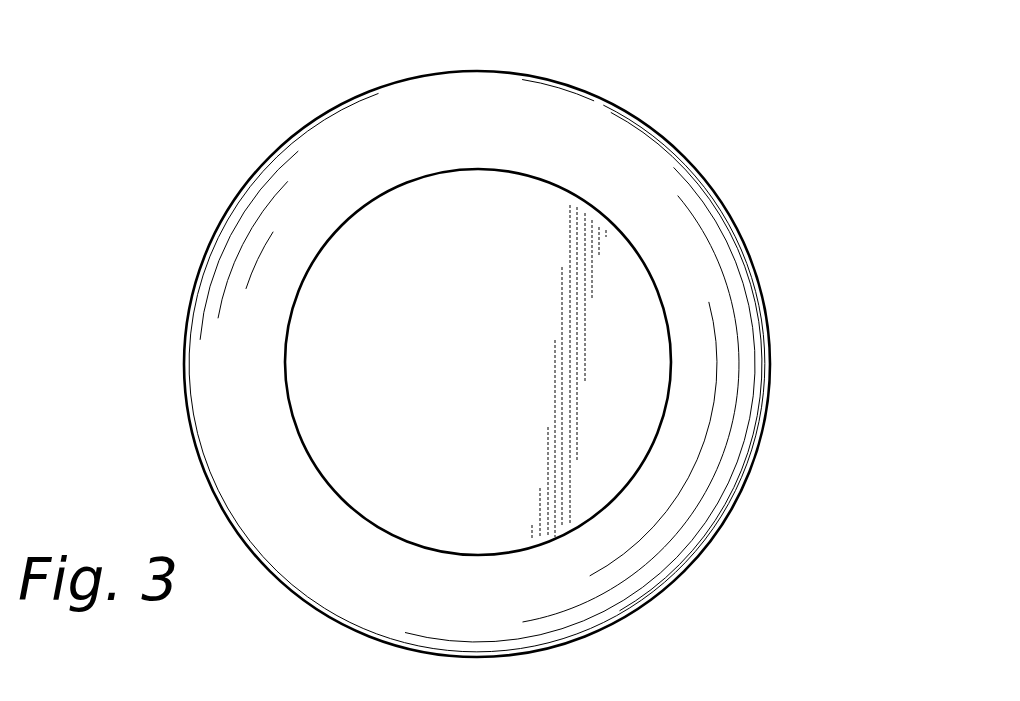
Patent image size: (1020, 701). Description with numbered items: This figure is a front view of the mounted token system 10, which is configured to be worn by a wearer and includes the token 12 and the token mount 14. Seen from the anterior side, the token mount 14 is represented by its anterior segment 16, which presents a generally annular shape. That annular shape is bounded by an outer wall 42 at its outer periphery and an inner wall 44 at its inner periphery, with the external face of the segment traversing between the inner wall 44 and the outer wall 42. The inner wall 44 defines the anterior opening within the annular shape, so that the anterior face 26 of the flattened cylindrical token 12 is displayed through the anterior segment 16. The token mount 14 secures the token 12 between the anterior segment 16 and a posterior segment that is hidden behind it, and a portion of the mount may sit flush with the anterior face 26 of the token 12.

The mounted token system 10 is at (812, 123).
The token 12 is at (488, 218).
The token mount 14 is at (577, 113).
The anterior segment 16 is at (353, 130).
The anterior face 26 is at (315, 350).
The outer wall 42 is at (822, 335).
The inner wall 44 is at (690, 443).